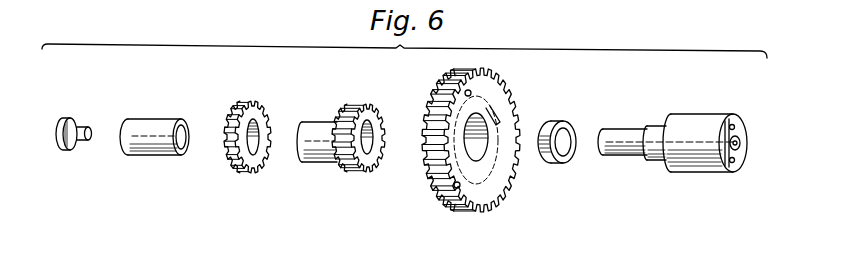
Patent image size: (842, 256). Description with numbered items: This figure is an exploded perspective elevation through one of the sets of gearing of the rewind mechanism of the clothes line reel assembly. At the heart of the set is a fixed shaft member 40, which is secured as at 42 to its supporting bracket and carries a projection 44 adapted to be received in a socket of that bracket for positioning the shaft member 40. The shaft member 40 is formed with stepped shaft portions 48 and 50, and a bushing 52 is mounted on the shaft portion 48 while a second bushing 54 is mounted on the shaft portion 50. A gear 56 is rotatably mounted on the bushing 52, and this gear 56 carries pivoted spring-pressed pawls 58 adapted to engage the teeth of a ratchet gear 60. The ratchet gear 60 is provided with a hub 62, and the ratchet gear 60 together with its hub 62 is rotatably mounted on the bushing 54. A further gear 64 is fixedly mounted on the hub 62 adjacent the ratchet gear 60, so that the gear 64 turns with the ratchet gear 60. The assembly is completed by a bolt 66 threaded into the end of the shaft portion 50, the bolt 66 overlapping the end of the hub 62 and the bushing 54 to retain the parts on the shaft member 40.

The fixed shaft member 40 is at (694, 173).
The securing means 42 is at (734, 165).
The projection 44 is at (741, 140).
The stepped shaft portion 48 is at (652, 161).
The stepped shaft portion 50 is at (626, 157).
The bushing 52 is at (555, 163).
The bushing 54 is at (157, 156).
The gear 56 is at (475, 212).
The pivoted spring-pressed pawls 58 is at (471, 92).
The ratchet gear 60 is at (349, 173).
The hub 62 is at (310, 164).
The gear 64 is at (245, 173).
The bolt 66 is at (73, 152).